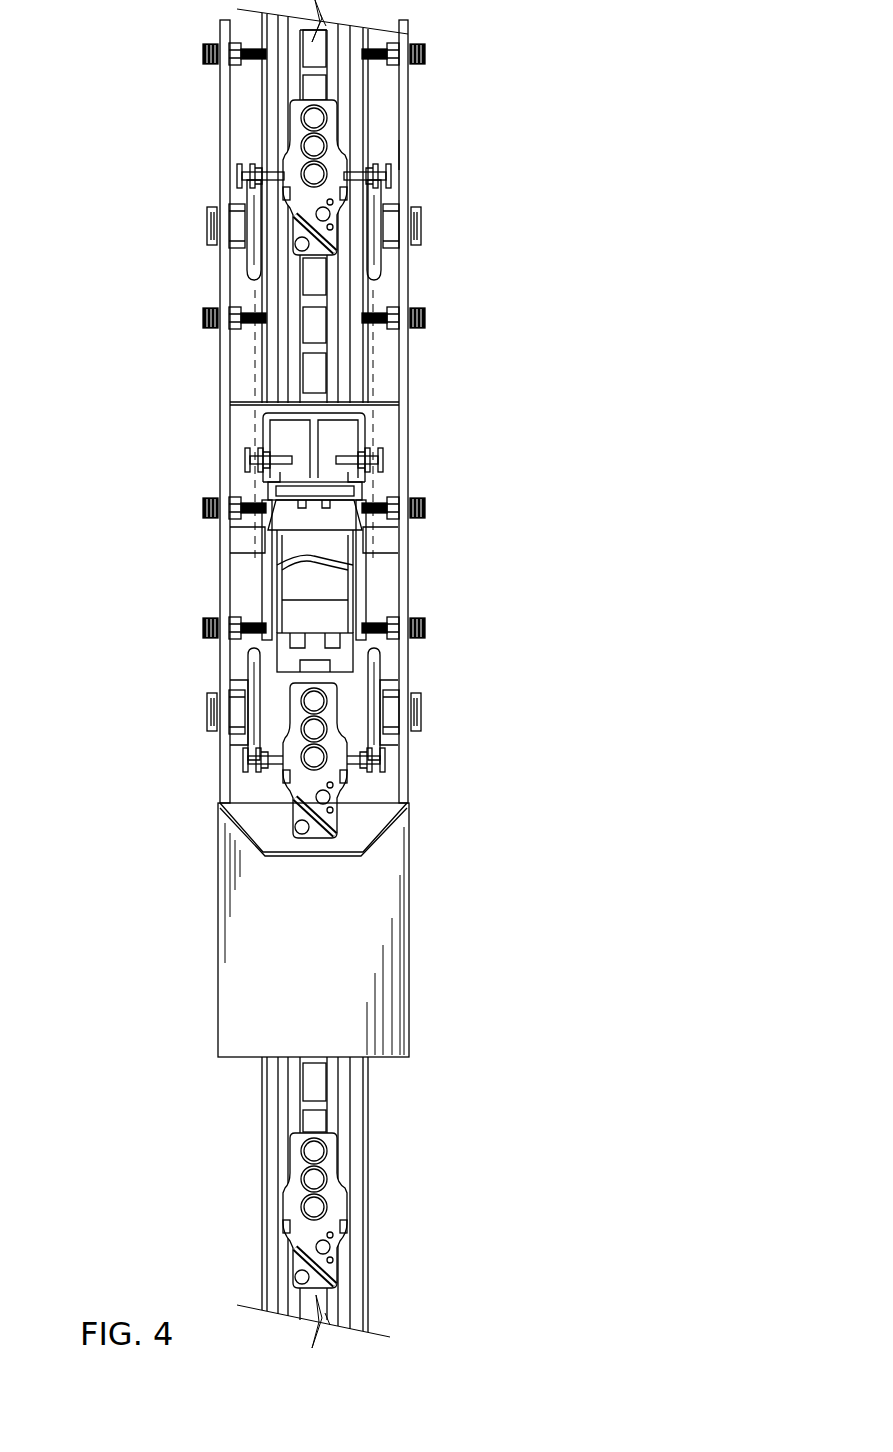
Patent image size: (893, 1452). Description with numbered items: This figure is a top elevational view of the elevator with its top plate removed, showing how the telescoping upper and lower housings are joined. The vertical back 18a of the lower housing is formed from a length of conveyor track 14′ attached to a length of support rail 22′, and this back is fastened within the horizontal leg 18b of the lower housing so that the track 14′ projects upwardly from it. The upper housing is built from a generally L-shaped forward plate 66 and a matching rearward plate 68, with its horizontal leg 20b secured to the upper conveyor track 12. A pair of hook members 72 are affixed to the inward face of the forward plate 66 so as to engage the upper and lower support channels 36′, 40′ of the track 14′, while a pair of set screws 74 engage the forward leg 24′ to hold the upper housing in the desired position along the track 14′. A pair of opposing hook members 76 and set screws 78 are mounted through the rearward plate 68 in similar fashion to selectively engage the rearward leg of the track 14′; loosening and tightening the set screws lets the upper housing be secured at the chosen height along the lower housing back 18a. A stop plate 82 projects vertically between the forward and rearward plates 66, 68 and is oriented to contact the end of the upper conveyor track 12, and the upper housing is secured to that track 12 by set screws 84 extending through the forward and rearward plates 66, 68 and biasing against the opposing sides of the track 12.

The upper conveyor track 12 is at (352, 42).
The forward plate 66 is at (218, 140).
The rearward plate 68 is at (408, 120).
The horizontal leg of upper housing 20b is at (410, 153).
The set screws 84 is at (200, 60).
The stop plate 82 is at (250, 400).
The support rail 22′ is at (322, 442).
The vertical back of lower housing 18a is at (390, 475).
The set screws 74 is at (207, 500).
The set screws 78 is at (395, 500).
The lower support channel 40′ is at (250, 530).
The hook members 72 is at (243, 562).
The hook members 76 is at (387, 562).
The forward leg 24′ is at (280, 578).
The conveyor track 14′ is at (290, 617).
The upper support channel 36′ is at (250, 648).
The horizontal leg of lower housing 18b is at (408, 983).